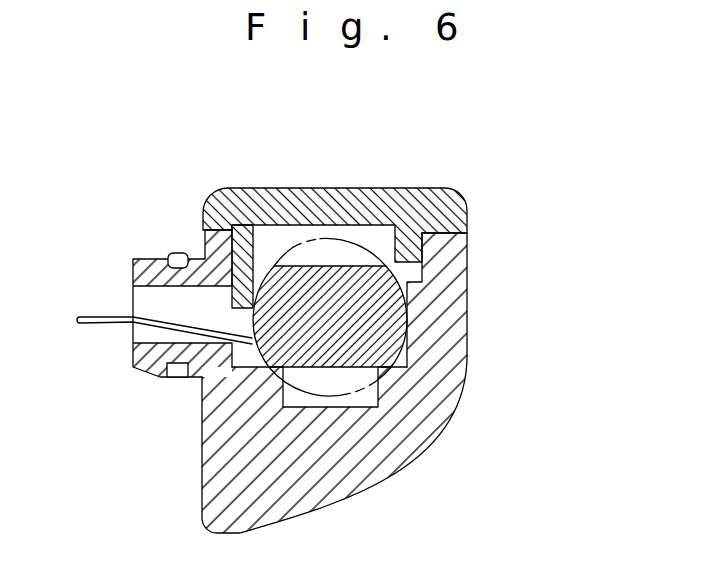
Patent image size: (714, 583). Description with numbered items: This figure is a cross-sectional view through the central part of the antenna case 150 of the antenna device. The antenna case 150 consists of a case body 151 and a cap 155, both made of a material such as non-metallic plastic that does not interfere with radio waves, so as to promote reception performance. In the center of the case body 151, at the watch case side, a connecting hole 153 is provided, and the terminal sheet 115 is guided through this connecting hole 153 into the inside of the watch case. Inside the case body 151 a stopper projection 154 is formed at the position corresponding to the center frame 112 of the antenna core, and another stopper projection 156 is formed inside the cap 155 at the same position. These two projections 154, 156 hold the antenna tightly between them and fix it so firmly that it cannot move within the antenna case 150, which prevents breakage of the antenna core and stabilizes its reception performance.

The center frame 112 is at (403, 353).
The terminal sheet 115 is at (93, 313).
The antenna case 150 is at (421, 314).
The case body 151 is at (460, 306).
The connecting hole 153 is at (157, 337).
The stopper projection 154 is at (413, 292).
The cap 155 is at (308, 197).
The stopper projection 156 is at (247, 305).